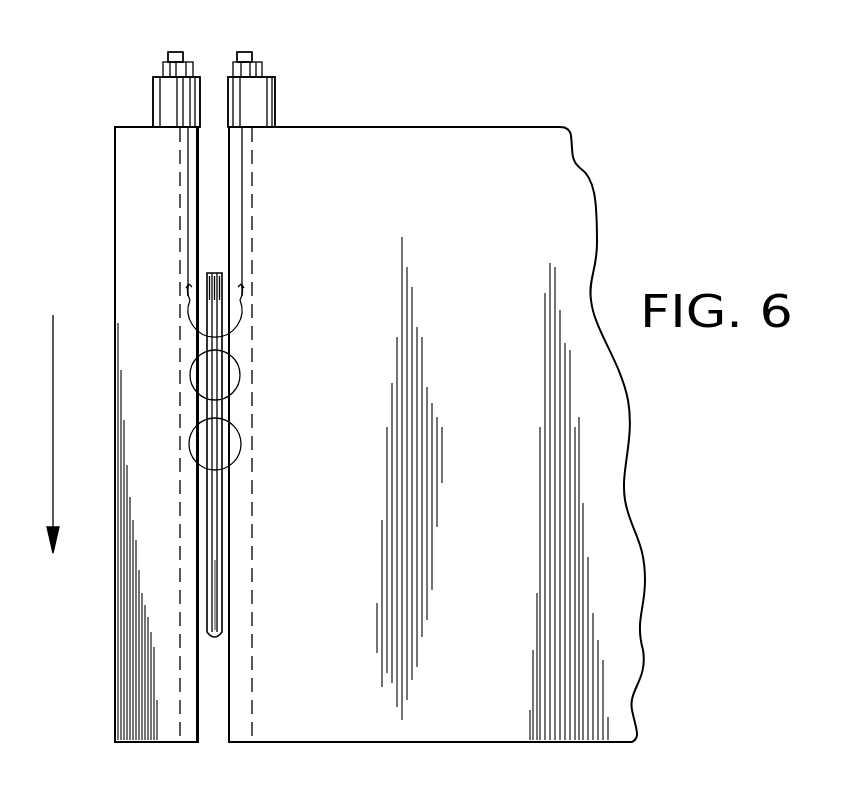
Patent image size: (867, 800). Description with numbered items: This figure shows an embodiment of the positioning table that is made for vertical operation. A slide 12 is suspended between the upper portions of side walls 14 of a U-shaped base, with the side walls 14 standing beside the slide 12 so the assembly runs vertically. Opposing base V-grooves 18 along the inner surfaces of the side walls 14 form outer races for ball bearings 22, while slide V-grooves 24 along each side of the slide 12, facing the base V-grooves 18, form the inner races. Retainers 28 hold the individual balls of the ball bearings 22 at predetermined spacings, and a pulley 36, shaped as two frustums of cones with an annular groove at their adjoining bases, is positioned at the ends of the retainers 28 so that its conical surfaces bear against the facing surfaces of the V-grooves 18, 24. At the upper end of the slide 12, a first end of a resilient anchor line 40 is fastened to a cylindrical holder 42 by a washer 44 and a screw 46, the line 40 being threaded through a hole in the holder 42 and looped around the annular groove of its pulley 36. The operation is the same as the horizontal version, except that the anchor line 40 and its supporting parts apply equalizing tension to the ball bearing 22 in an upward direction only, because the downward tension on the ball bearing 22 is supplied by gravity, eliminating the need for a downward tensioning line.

The slide 12 is at (597, 217).
The side walls 14 is at (117, 528).
The base V-grooves 18 is at (190, 733).
The ball bearings 22 is at (237, 453).
The slide V-grooves 24 is at (240, 735).
The retainers 28 is at (217, 603).
The pulley 36 is at (240, 302).
The resilient line 40 is at (158, 68).
The cylindrical holder 42 is at (153, 95).
The washer 44 is at (228, 72).
The screw 46 is at (168, 53).